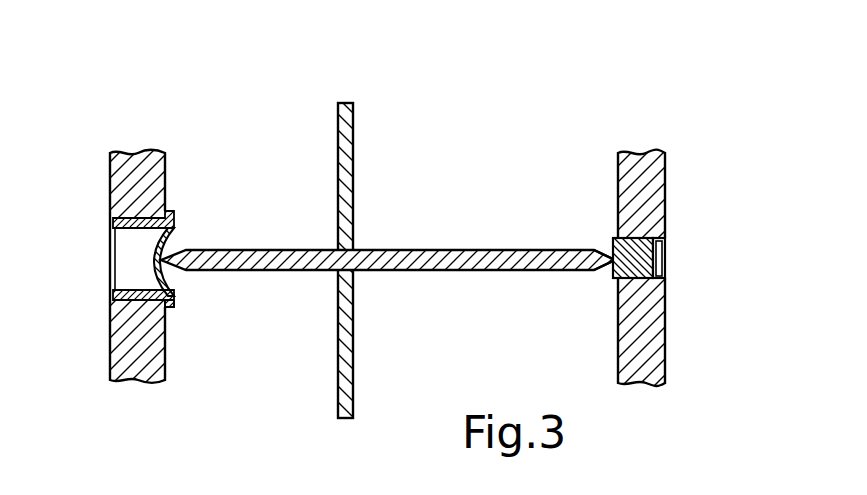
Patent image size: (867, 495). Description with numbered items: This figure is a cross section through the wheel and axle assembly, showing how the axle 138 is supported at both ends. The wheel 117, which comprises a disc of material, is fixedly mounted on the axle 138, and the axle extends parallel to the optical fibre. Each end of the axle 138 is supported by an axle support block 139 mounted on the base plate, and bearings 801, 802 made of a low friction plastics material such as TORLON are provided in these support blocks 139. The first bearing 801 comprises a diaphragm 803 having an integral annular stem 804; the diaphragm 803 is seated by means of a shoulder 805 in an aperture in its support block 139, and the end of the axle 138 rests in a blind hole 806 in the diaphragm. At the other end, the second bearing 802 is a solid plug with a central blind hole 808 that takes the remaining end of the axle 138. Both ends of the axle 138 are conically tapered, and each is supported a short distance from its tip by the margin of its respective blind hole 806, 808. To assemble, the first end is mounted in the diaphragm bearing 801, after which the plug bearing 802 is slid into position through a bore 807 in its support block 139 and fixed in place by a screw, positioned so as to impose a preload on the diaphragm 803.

The axle support block 139 is at (139, 165).
The wheel 117 is at (350, 197).
The axle 138 is at (537, 252).
The bearing 801 is at (130, 267).
The bearing 802 is at (658, 278).
The diaphragm 803 is at (174, 232).
The annular stem 804 is at (130, 225).
The shoulder 805 is at (170, 306).
The blind hole 806 is at (160, 266).
The bore 807 is at (665, 245).
The central blind hole 808 is at (613, 268).